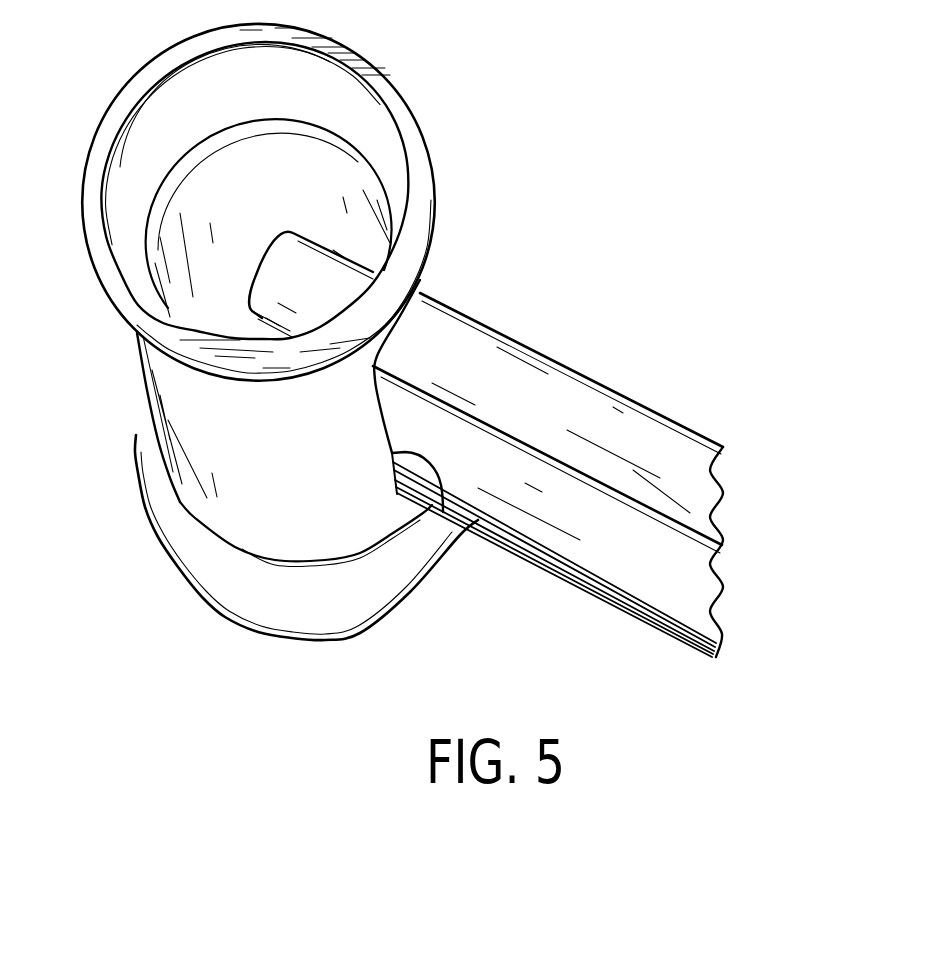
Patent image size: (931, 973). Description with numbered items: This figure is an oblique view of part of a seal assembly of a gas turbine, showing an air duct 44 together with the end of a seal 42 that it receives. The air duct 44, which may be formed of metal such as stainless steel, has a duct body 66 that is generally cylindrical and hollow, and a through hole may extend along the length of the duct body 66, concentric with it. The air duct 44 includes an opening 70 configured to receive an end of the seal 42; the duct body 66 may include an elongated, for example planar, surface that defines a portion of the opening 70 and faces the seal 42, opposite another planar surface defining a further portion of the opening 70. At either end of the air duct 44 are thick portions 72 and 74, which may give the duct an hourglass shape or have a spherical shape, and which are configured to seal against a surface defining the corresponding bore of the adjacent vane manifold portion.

The seal 42 is at (619, 385).
The air duct 44 is at (159, 586).
The duct body 66 is at (205, 405).
The opening 70 is at (443, 512).
The thick portion 72 is at (222, 592).
The thick portion 74 is at (412, 142).